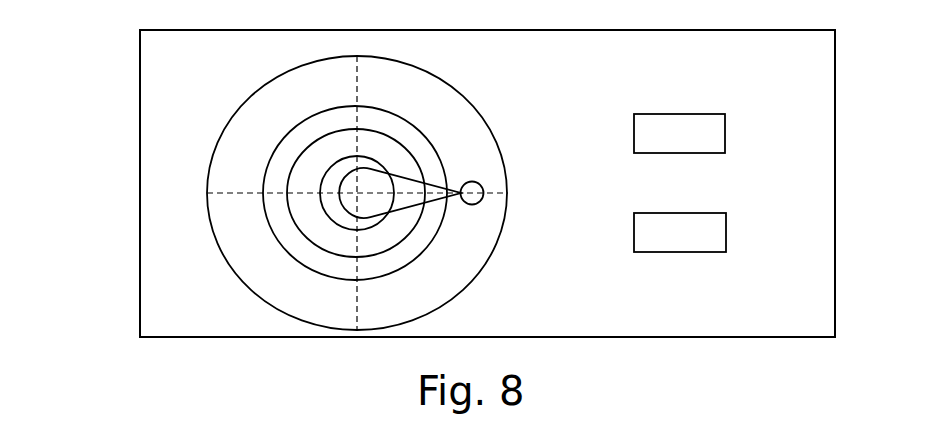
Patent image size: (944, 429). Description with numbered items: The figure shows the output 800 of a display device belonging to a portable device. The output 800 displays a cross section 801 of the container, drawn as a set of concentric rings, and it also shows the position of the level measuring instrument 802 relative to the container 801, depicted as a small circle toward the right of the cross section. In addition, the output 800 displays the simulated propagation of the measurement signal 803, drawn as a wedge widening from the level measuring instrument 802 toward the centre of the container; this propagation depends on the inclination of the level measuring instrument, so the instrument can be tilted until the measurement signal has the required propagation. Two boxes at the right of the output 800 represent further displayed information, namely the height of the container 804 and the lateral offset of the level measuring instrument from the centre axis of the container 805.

The output 800 is at (122, 131).
The cross section of the container 801 is at (452, 86).
The level measuring instrument 802 is at (476, 182).
The simulated propagation of the measurement signal 803 is at (357, 192).
The height of the container 804 is at (673, 114).
The lateral offset of the level measuring instrument from the centre axis of the con 805 is at (690, 252).